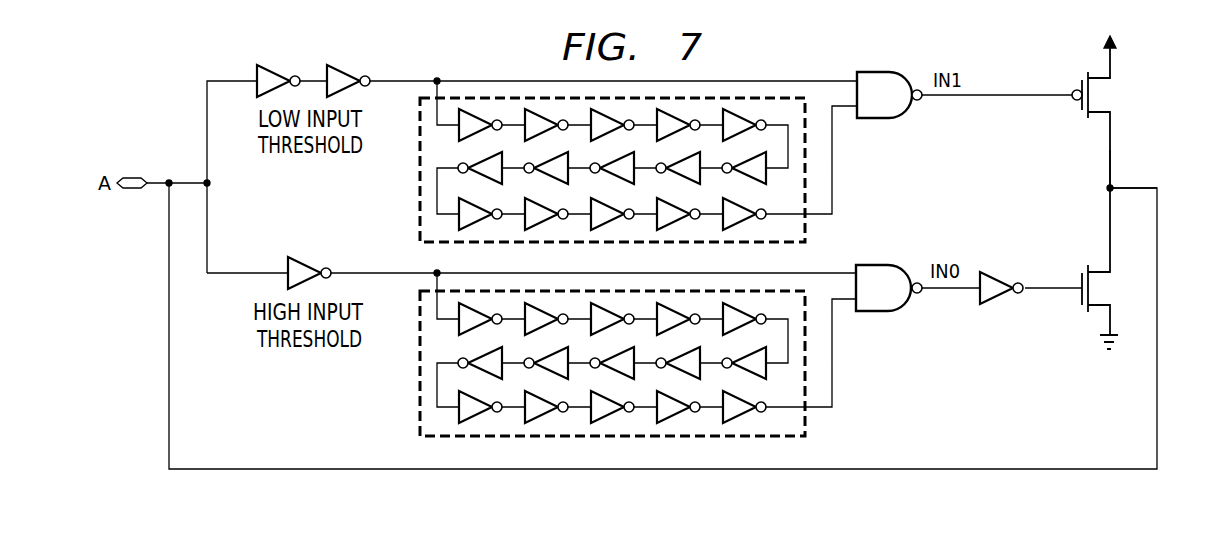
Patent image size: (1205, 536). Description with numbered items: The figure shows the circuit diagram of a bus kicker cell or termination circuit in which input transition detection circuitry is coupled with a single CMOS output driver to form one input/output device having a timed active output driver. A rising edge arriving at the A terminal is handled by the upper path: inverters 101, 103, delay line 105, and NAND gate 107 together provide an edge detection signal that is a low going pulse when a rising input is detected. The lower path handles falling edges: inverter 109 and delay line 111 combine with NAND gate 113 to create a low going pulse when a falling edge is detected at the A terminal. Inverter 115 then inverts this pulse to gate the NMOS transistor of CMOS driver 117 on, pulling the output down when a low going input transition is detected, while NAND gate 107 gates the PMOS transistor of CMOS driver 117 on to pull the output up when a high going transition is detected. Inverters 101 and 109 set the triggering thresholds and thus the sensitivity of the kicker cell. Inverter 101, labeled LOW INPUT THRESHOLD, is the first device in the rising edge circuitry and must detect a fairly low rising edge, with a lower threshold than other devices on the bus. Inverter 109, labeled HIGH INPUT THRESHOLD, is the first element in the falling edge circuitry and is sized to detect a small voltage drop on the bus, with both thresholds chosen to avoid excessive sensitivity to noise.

The inverter 101 is at (257, 67).
The inverter 103 is at (327, 67).
The delay line 105 is at (408, 202).
The NAND gate 107 is at (892, 72).
The inverter 109 is at (288, 266).
The delay line 111 is at (406, 397).
The NAND gate 113 is at (892, 265).
The inverter 115 is at (1005, 303).
The CMOS driver 117 is at (1113, 156).